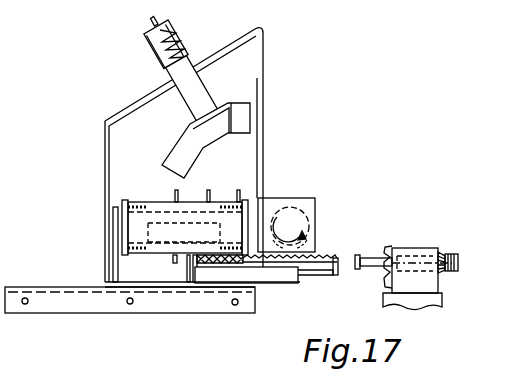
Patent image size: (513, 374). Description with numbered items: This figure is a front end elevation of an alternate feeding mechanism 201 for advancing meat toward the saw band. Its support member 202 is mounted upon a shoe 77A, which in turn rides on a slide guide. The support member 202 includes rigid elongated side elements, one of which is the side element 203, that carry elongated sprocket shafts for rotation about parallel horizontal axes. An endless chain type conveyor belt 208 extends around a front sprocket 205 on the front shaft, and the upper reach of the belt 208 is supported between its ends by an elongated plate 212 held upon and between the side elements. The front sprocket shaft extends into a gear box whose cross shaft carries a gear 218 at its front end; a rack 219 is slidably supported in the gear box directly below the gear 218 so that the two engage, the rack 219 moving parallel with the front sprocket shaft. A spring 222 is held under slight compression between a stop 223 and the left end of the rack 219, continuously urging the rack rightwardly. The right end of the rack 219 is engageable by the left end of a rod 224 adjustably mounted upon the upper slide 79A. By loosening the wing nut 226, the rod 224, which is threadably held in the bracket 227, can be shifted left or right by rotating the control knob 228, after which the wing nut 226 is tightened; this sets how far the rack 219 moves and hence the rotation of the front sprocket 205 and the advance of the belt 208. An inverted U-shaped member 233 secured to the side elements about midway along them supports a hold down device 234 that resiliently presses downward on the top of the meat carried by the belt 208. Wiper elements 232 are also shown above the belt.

The feeding mechanism 201 is at (280, 132).
The support member 202 is at (167, 284).
The side element 203 is at (110, 262).
The front sprocket 205 is at (112, 212).
The conveyor belt 208 is at (149, 200).
The elongated plate 212 is at (118, 205).
The gear 218 is at (300, 250).
The rack 219 is at (378, 300).
The spring 222 is at (240, 262).
The stop 223 is at (190, 270).
The rod 224 is at (372, 261).
The wing nut 226 is at (390, 246).
The bracket 227 is at (428, 249).
The control knob 228 is at (458, 268).
The wiper elements 232 is at (238, 190).
The inverted U-shaped member 233 is at (144, 98).
The hold down device 234 is at (175, 149).
The shoe 77A is at (53, 307).
The upper slide 79A is at (428, 308).